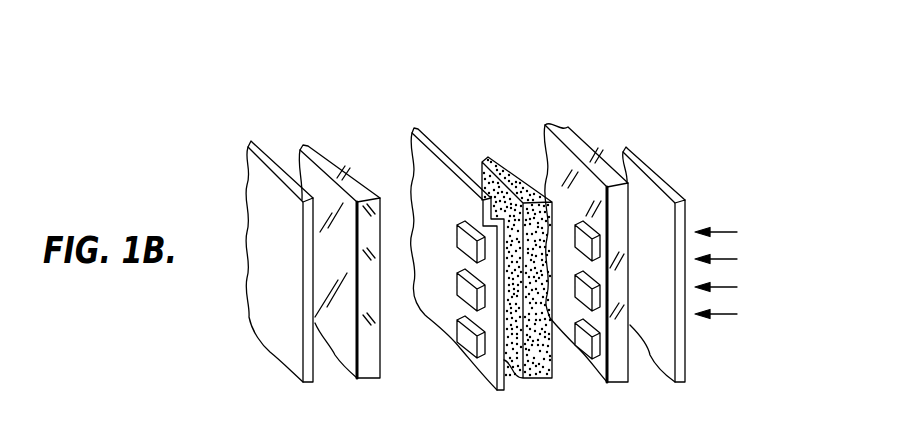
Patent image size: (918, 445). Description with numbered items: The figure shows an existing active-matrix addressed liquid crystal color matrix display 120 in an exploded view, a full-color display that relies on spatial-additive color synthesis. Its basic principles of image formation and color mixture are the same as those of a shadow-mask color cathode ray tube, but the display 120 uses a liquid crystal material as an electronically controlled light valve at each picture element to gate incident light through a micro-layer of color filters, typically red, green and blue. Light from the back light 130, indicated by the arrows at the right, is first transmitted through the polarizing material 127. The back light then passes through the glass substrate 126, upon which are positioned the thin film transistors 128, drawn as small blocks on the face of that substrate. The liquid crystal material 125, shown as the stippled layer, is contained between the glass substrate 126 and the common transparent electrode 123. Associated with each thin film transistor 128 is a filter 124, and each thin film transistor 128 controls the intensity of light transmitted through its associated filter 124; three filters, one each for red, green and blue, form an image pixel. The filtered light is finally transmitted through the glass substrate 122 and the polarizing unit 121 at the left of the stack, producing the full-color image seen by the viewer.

The liquid crystal color matrix display 120 is at (394, 71).
The polarizing unit 121 is at (265, 145).
The glass substrate 122 is at (340, 152).
The common (transparent) electrode 123 is at (441, 150).
The filter 124 is at (464, 368).
The liquid crystal material 125 is at (508, 160).
The glass substrate 126 is at (589, 140).
The polarizing material 127 is at (666, 188).
The thin film transistors 128 is at (585, 365).
The back light 130 is at (723, 316).